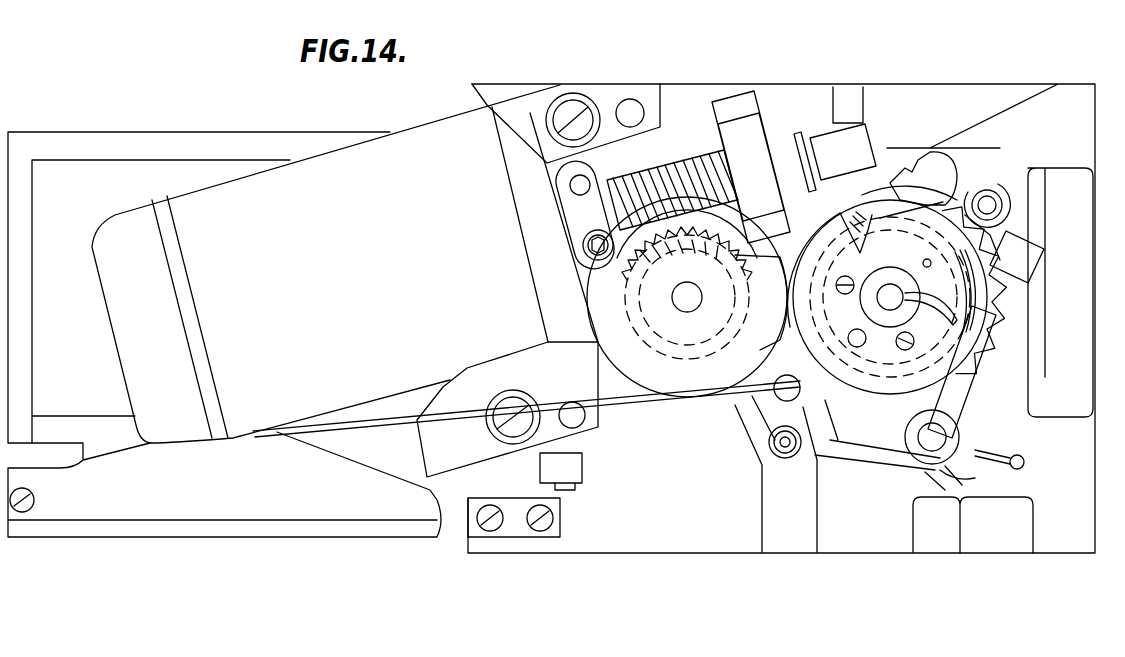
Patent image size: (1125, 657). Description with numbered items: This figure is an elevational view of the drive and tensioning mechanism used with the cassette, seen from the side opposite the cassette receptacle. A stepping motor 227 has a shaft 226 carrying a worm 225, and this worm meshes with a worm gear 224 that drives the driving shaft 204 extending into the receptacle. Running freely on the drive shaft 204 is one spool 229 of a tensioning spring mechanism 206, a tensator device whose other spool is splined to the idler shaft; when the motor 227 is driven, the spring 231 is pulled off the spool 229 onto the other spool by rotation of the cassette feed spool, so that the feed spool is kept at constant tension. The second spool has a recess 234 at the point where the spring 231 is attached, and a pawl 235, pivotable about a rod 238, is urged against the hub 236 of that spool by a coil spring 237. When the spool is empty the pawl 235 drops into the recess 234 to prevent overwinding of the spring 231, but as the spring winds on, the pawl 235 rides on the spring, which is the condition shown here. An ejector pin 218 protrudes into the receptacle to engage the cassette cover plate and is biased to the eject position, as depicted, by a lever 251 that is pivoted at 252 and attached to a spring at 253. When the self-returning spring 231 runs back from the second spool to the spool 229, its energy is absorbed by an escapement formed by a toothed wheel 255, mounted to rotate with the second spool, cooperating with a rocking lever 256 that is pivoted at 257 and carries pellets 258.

The driving shaft 204 is at (672, 300).
The tensioning spring mechanism 206 is at (1020, 312).
The ejector pin 218 is at (817, 405).
The worm gear 224 is at (630, 248).
The worm 225 is at (683, 160).
The shaft of the stepping motor 226 is at (553, 207).
The stepping motor 227 is at (330, 310).
The spool 229 is at (683, 380).
The spring 231 is at (755, 334).
The recess 234 is at (945, 265).
The pawl 235 is at (997, 355).
The hub 236 is at (918, 266).
The coil spring 237 is at (1020, 467).
The rod 238 is at (928, 442).
The lever 251 is at (603, 447).
The pivot 252 is at (440, 492).
The spring attachment 253 is at (630, 437).
The toothed wheel 255 is at (940, 197).
The rocking lever 256 is at (1043, 240).
The pivot 257 is at (987, 190).
The pellets 258 is at (933, 177).